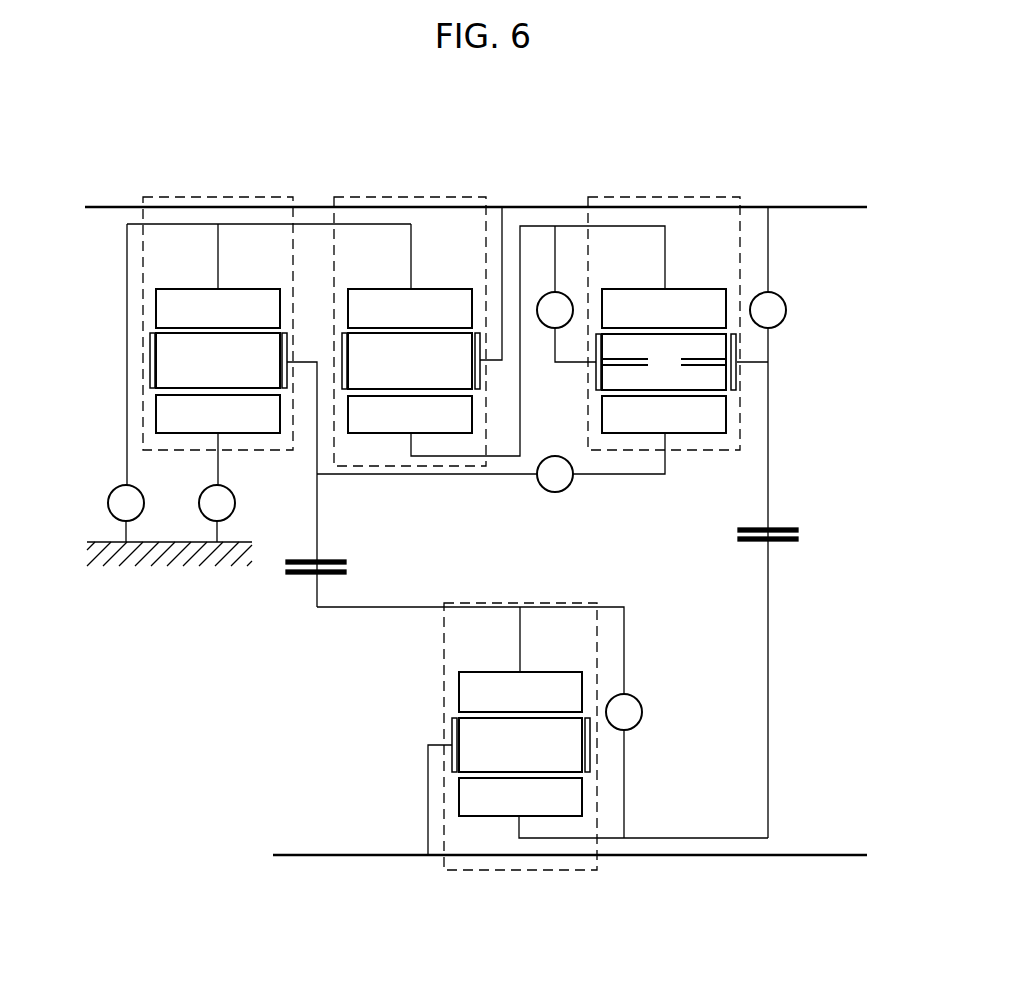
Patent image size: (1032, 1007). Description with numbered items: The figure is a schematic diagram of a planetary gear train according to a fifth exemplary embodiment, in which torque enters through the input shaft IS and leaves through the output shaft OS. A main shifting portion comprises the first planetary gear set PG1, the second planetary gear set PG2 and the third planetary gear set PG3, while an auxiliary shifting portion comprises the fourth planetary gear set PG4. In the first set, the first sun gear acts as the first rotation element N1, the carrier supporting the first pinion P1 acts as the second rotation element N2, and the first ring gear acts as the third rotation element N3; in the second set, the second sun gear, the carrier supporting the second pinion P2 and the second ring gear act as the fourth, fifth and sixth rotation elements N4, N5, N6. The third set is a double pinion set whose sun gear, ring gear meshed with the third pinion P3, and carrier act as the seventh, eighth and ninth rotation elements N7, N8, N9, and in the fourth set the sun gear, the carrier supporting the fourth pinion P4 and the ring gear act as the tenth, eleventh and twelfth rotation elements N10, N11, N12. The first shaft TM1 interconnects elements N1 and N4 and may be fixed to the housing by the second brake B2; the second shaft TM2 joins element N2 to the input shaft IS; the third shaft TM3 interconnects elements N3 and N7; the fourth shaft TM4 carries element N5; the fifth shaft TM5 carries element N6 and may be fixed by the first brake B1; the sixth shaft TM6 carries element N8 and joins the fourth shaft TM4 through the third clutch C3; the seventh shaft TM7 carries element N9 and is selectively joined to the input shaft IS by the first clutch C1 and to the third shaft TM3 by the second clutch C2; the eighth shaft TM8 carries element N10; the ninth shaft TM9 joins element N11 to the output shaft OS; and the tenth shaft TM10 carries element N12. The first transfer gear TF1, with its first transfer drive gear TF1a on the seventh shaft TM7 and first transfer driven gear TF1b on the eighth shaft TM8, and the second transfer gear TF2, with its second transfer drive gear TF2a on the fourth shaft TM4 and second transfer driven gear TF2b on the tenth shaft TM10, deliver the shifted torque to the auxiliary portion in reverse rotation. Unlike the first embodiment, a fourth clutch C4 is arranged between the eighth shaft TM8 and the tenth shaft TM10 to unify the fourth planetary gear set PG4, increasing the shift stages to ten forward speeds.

The input shaft IS is at (858, 188).
The output shaft OS is at (822, 836).
The first planetary gear set PG1 is at (450, 193).
The second planetary gear set PG2 is at (181, 193).
The third planetary gear set PG3 is at (702, 193).
The fourth planetary gear set PG4 is at (601, 651).
The first rotation element N1 is at (410, 308).
The second rotation element N2 is at (344, 342).
The third rotation element N3 is at (410, 414).
The fourth rotation element N4 is at (218, 308).
The fifth rotation element N5 is at (151, 342).
The sixth rotation element N6 is at (218, 414).
The seventh rotation element N7 is at (664, 308).
The eighth rotation element N8 is at (664, 414).
The ninth rotation element N9 is at (598, 342).
The tenth rotation element N10 is at (520, 797).
The eleventh rotation element N11 is at (454, 722).
The twelfth rotation element N12 is at (520, 692).
The first pinion P1 is at (410, 361).
The second pinion P2 is at (218, 360).
The third pinion P3 is at (664, 362).
The fourth pinion P4 is at (520, 745).
The first shaft TM1 is at (259, 221).
The second shaft TM2 is at (508, 220).
The third shaft TM3 is at (504, 460).
The fourth shaft TM4 is at (434, 478).
The fifth shaft TM5 is at (224, 464).
The sixth shaft TM6 is at (676, 462).
The seventh shaft TM7 is at (771, 416).
The eighth shaft TM8 is at (771, 728).
The ninth shaft TM9 is at (425, 787).
The tenth shaft TM10 is at (363, 612).
The first clutch C1 is at (768, 310).
The second clutch C2 is at (566, 294).
The third clutch C3 is at (555, 474).
The fourth clutch C4 is at (624, 712).
The first brake B1 is at (217, 513).
The second brake B2 is at (126, 513).
The first transfer gear TF1 is at (718, 536).
The first transfer drive gear TF1a is at (738, 530).
The first transfer driven gear TF1b is at (739, 549).
The second transfer gear TF2 is at (366, 579).
The second transfer drive gear TF2a is at (346, 562).
The second transfer driven gear TF2b is at (404, 554).